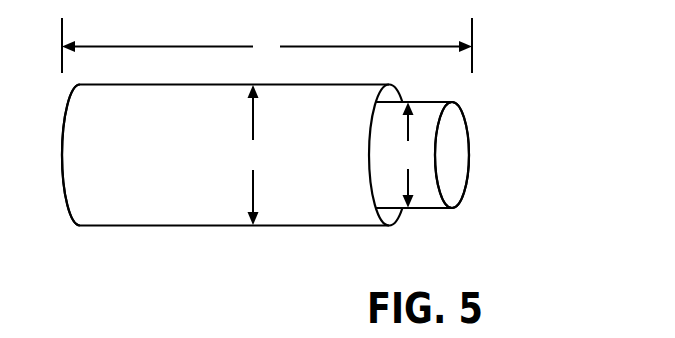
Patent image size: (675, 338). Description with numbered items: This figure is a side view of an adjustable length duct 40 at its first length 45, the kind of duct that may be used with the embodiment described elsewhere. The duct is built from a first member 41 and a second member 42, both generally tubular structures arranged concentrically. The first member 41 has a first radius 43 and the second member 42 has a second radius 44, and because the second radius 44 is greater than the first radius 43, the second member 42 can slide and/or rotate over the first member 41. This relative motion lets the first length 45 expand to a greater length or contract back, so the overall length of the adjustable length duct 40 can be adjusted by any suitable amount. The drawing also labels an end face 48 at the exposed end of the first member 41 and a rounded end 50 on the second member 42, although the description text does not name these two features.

The adjustable length duct 40 is at (566, 167).
The first member 41 is at (425, 119).
The second member 42 is at (150, 205).
The first radius 43 is at (408, 155).
The second radius 44 is at (253, 155).
The first length 45 is at (267, 45).
The end face 48 is at (458, 160).
The rounded back end 50 is at (62, 155).